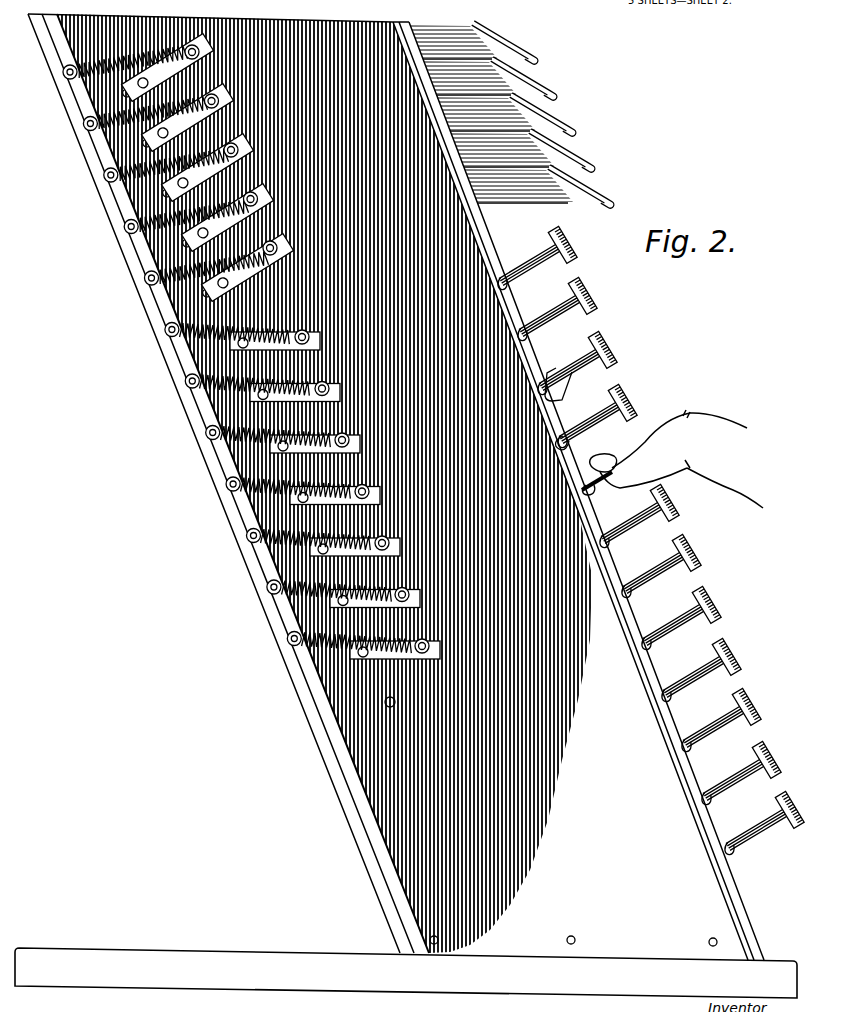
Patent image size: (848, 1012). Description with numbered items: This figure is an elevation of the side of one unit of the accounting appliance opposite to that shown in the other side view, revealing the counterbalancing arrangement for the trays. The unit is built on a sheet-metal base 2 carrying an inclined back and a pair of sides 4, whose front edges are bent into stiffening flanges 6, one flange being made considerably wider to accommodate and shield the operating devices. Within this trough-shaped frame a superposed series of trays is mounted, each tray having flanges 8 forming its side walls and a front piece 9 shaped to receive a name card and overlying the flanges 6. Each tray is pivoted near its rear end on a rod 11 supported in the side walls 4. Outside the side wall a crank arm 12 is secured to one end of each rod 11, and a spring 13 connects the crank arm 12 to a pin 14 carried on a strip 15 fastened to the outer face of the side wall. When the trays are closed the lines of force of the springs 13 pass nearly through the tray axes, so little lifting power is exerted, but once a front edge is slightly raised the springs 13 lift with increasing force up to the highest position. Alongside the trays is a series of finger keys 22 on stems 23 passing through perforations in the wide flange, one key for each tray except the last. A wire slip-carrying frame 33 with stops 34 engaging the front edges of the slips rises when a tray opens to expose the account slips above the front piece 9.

The base 2 is at (240, 957).
The side 4 is at (343, 698).
The flange 6 is at (490, 258).
The flange 8 is at (494, 145).
The front piece 9 is at (523, 82).
The pivot rod 11 is at (155, 108).
The crank arm 12 is at (212, 93).
The spring 13 is at (190, 48).
The pin 14 is at (86, 124).
The strip 15 is at (204, 408).
The finger key 22 is at (574, 256).
The stem 23 is at (560, 318).
The slip-carrying frame 33 is at (575, 451).
The stop 34 is at (570, 390).